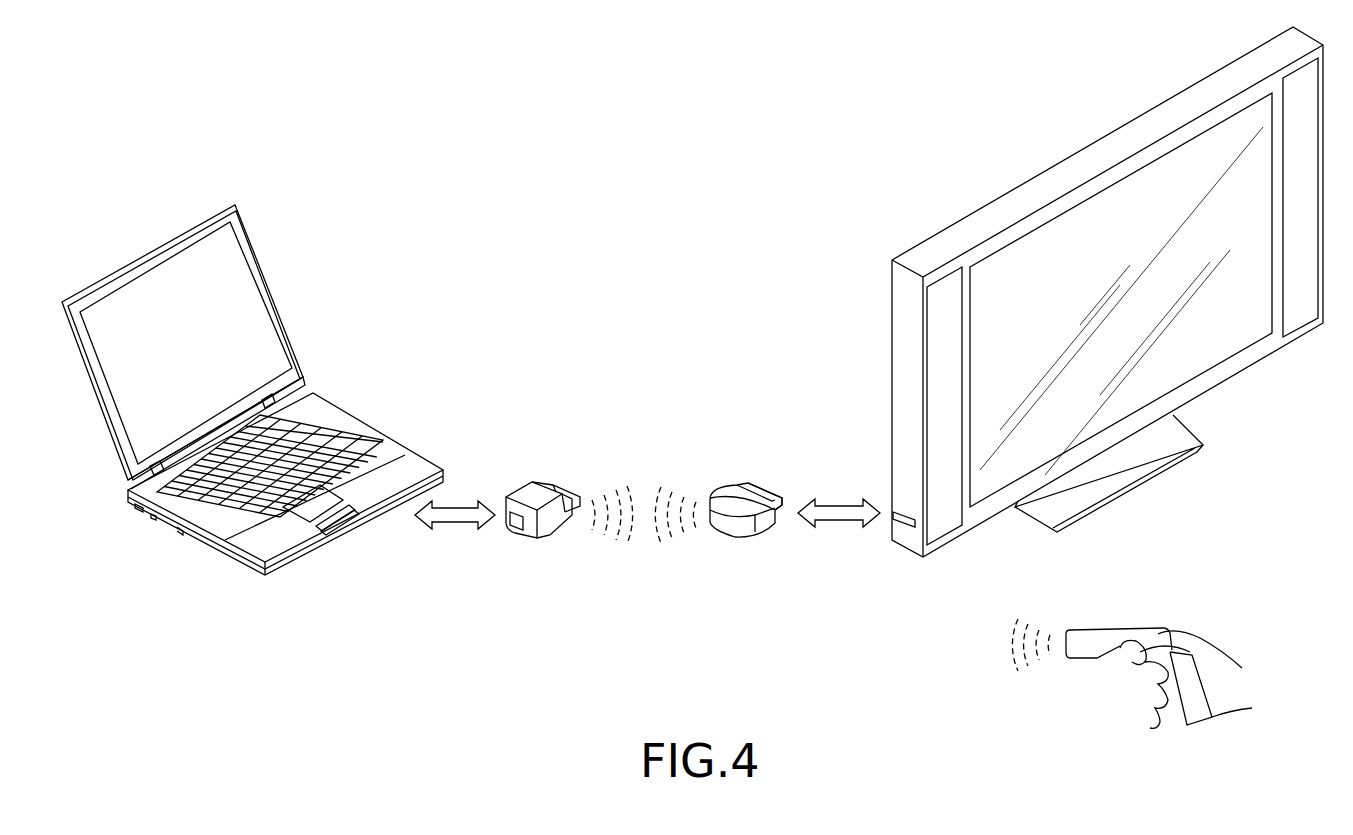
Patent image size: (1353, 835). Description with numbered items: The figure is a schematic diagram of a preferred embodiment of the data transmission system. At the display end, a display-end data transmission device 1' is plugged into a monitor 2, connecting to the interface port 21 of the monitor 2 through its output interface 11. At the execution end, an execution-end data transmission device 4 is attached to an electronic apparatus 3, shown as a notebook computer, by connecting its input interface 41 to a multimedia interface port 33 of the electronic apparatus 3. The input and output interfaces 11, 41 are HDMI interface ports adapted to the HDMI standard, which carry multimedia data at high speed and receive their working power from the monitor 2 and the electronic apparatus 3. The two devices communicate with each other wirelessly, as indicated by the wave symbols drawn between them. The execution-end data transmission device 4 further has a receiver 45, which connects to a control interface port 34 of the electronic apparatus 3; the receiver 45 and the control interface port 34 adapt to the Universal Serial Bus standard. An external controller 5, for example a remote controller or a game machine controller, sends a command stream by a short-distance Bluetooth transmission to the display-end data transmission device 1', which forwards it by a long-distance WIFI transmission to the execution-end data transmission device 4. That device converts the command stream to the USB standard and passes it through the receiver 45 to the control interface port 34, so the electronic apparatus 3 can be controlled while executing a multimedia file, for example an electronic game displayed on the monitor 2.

The monitor 2 is at (1208, 348).
The electronic apparatus 3 is at (393, 447).
The execution-end data transmission device 4 is at (520, 490).
The input interface 41 is at (558, 488).
The receiver 45 is at (510, 527).
The display-end data transmission device 1' is at (744, 490).
The output interface 11 is at (767, 490).
The interface port 21 is at (898, 520).
The multimedia interface port 33 is at (132, 510).
The control interface port 34 is at (152, 520).
The external controller 5 is at (1122, 632).